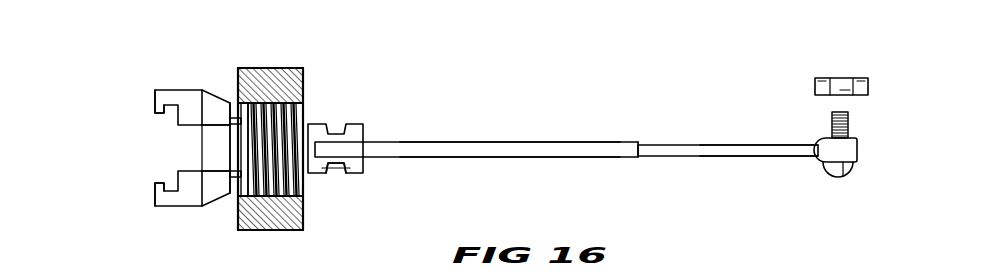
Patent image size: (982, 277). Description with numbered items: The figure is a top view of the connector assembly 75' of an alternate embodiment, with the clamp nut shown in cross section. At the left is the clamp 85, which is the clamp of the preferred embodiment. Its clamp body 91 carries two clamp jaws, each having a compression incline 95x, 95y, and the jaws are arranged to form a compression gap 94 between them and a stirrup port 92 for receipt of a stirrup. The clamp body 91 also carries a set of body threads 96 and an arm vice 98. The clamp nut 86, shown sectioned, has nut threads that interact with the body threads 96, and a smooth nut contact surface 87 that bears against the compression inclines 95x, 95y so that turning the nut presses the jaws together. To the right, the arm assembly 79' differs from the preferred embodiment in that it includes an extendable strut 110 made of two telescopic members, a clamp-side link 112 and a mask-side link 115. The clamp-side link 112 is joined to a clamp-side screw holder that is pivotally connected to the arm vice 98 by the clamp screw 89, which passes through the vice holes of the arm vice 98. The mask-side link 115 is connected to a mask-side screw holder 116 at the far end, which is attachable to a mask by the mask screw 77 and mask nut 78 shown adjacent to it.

The connector assembly 75' is at (175, 132).
The clamp 85 is at (213, 70).
The clamp body 91 is at (177, 88).
The stirrup port 92 is at (172, 113).
The compression gap 94 is at (213, 137).
The compression incline 95x is at (222, 108).
The compression incline 95y is at (214, 190).
The nut contact surface 87 is at (240, 158).
The clamp nut 86 is at (263, 68).
The body threads 96 is at (293, 123).
The arm vice 98 is at (360, 123).
The clamp screw 89 is at (333, 168).
The arm assembly 79' is at (500, 106).
The clamp-side link 112 is at (458, 140).
The extendable strut 110 is at (570, 142).
The mask-side link 115 is at (678, 145).
The mask-side screw holder 116 is at (847, 145).
The mask screw 77 is at (832, 173).
The mask nut 78 is at (835, 78).